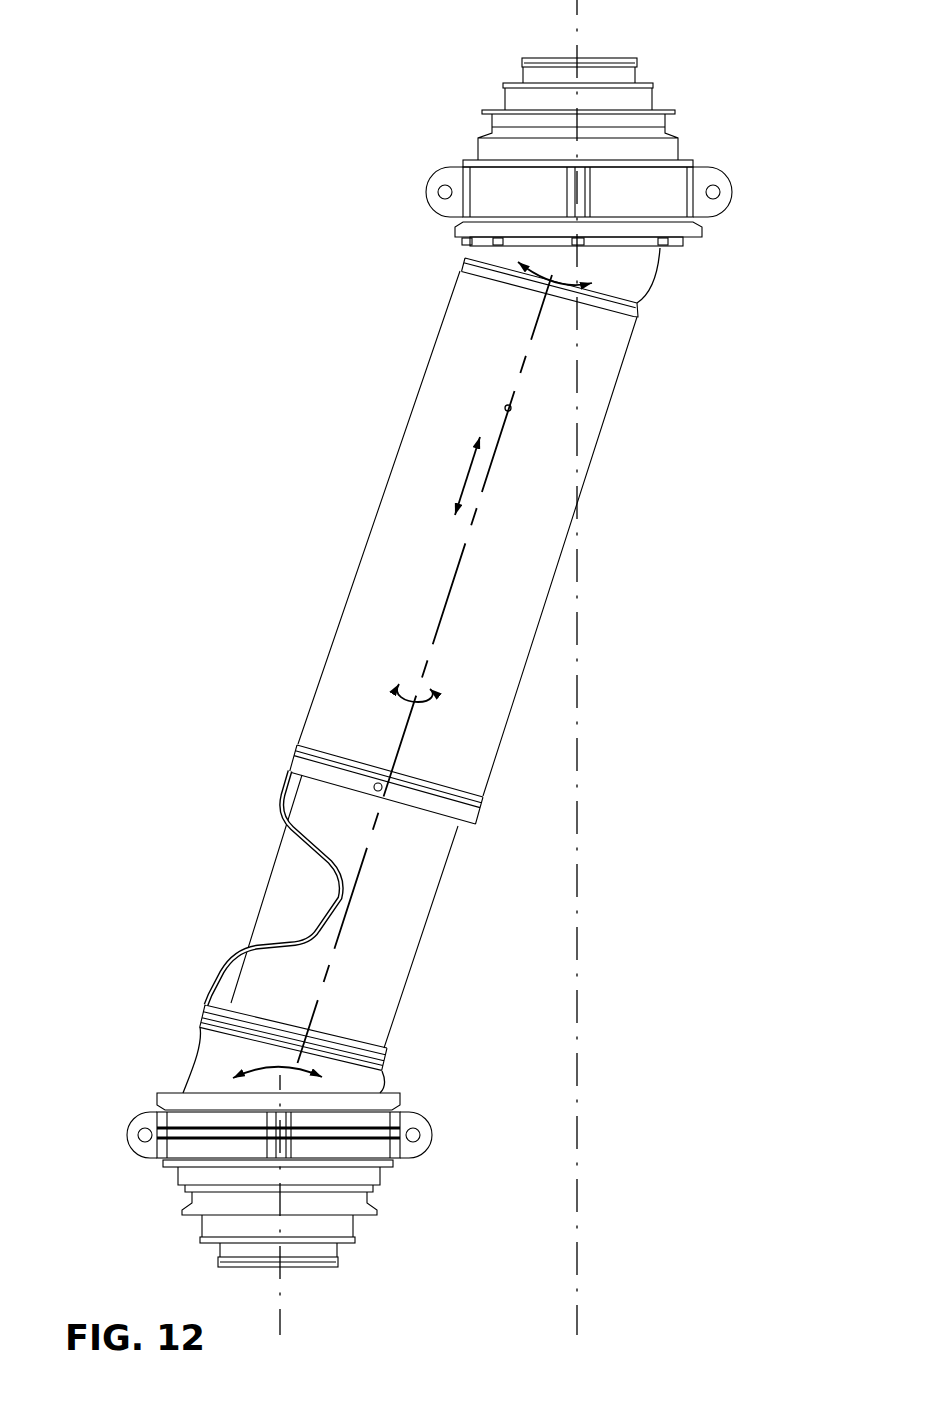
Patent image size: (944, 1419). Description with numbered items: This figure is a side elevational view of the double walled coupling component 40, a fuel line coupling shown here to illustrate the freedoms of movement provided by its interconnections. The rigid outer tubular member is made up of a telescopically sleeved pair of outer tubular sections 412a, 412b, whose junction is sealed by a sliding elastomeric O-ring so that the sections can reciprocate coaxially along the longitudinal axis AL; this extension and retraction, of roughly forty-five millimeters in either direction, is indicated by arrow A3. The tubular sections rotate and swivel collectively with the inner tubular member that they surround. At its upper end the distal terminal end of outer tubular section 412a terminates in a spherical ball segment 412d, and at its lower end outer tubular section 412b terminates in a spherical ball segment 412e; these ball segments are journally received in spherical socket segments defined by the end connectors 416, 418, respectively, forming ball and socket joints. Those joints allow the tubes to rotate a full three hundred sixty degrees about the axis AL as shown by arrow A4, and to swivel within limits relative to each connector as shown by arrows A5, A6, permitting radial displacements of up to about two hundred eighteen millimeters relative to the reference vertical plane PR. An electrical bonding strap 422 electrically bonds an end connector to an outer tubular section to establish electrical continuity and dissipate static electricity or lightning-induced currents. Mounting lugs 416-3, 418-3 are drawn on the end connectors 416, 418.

The double walled coupling component 40 is at (300, 495).
The end connector 416 is at (486, 136).
The first connector mounting ears 416-3 is at (712, 176).
The spherical ball segment 412d is at (655, 262).
The outer tubular section 412a is at (520, 607).
The outer tubular section 412b is at (408, 932).
The spherical ball segment 412e is at (193, 1075).
The electrical bonding strap 422 is at (224, 962).
The end connector 418 is at (175, 1177).
The second connector mounting ears 418-3 is at (135, 1122).
The arrow A3 is at (465, 487).
The arrow A4 is at (418, 705).
The arrow A5 is at (530, 268).
The arrow A6 is at (262, 1072).
The longitudinal axis AL is at (511, 409).
The reference vertical plane PR is at (578, 940).